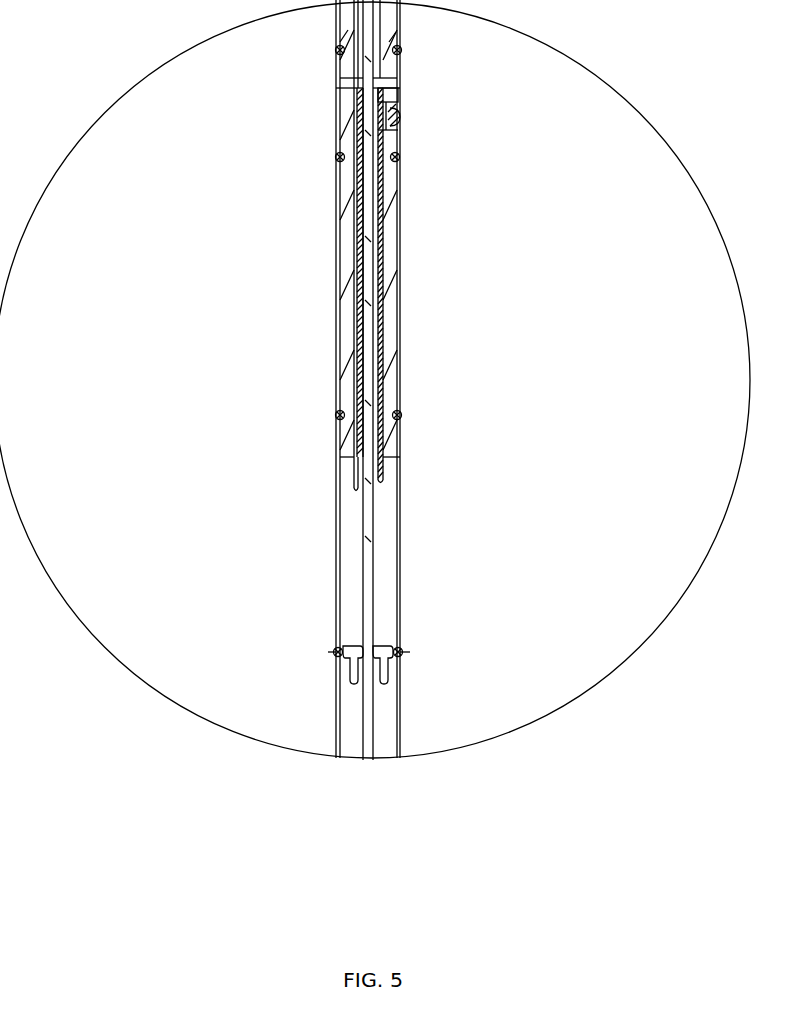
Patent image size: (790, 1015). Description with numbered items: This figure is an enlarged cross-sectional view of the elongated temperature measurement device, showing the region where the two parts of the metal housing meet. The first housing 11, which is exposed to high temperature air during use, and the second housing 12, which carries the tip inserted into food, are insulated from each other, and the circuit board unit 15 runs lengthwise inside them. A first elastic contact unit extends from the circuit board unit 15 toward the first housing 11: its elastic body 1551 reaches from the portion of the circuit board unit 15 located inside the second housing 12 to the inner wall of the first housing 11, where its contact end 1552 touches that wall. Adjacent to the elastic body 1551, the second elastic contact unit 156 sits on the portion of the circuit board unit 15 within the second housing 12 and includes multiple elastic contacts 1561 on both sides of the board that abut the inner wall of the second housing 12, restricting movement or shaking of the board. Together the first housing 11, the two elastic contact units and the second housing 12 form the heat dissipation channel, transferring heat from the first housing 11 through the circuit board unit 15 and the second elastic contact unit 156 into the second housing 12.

The first housing 11 is at (336, 22).
The second housing 12 is at (336, 487).
The circuit board unit 15 is at (372, 568).
The elastic body 1551 is at (400, 318).
The contact end 1552 is at (400, 127).
The second elastic contact unit 156 is at (348, 617).
The elastic contacts 1561 is at (336, 652).